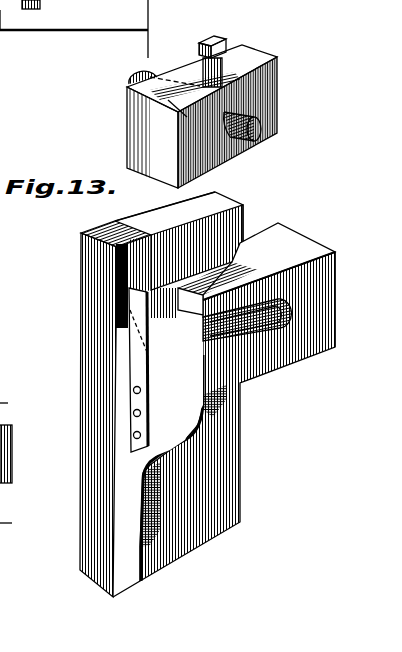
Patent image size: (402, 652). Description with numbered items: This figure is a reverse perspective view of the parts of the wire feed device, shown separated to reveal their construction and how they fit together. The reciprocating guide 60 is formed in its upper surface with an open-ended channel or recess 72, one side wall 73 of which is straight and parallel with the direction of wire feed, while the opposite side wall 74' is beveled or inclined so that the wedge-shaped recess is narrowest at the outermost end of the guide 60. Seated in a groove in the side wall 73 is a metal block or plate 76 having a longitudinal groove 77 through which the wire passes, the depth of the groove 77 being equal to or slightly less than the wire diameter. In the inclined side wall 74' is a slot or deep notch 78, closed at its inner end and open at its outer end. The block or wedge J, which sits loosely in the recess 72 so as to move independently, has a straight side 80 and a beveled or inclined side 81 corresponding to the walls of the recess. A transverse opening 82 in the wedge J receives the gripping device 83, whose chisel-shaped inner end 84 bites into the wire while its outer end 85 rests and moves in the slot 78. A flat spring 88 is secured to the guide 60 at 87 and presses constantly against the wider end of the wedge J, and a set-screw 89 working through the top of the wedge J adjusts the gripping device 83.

The reciprocating guide 60 is at (227, 482).
The open-ended channel or recess 72 is at (206, 304).
The side wall 73 is at (120, 277).
The beveled or inclined side wall 74' is at (278, 282).
The metal block or plate 76 is at (143, 238).
The longitudinal groove 77 is at (200, 264).
The slot or deep notch 78 is at (288, 308).
The straight side 80 is at (187, 67).
The beveled or inclined side 81 is at (263, 102).
The opening 82 is at (187, 117).
The gripping device 83 is at (256, 140).
The chisel-shaped inner end 84 is at (128, 82).
The outer end 85 is at (258, 130).
The securing point 87 is at (141, 435).
The flat spring 88 is at (143, 372).
The set-screw 89 is at (221, 47).
The block or wedge J is at (142, 133).